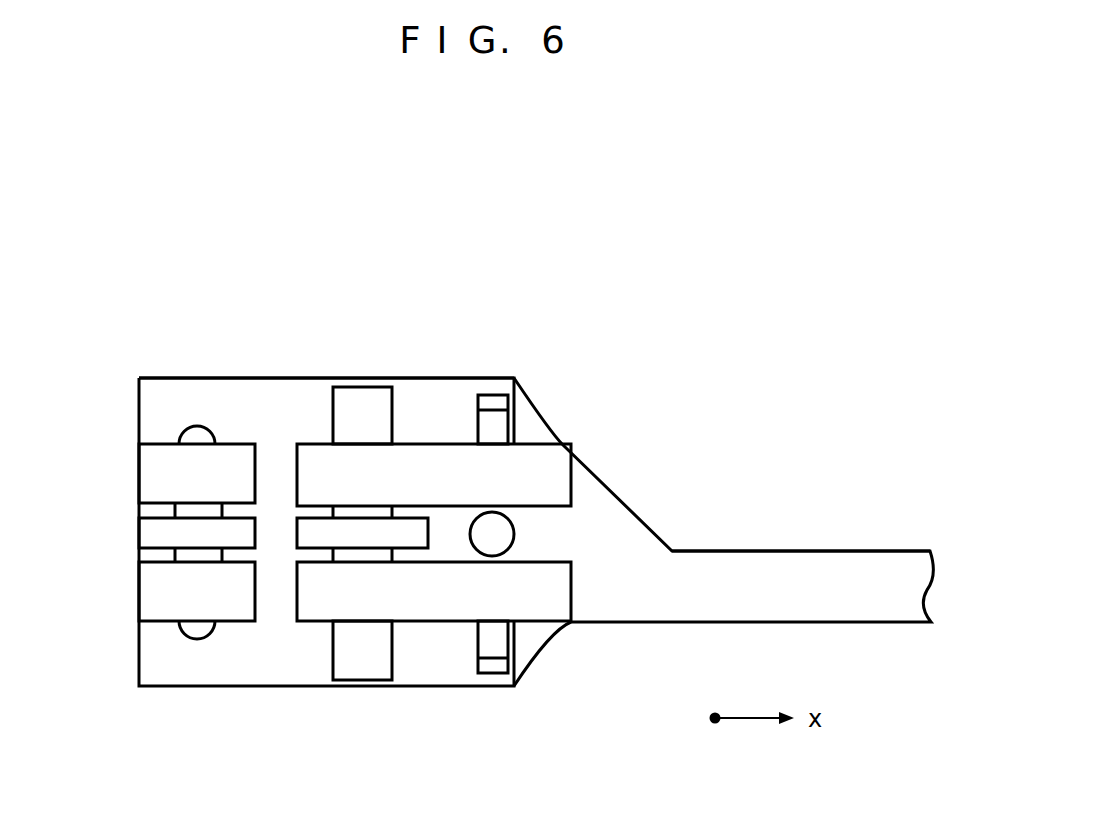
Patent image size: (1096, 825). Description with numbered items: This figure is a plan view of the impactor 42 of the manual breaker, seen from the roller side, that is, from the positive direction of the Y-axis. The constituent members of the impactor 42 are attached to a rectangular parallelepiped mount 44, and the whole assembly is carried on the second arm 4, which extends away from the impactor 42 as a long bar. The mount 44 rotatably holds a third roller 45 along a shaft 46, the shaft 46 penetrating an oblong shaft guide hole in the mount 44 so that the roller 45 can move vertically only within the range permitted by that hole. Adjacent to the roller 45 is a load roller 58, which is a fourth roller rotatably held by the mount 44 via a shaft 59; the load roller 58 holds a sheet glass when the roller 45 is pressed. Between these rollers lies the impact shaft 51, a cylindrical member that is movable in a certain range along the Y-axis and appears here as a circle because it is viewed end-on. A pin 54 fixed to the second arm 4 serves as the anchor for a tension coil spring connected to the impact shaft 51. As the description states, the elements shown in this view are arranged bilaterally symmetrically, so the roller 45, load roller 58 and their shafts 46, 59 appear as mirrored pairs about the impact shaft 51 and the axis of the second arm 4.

The second arm 4 is at (788, 560).
The impactor 42 is at (283, 313).
The mount 44 is at (197, 377).
The roller 45 is at (312, 532).
The shaft 46 is at (363, 387).
The impact shaft 51 is at (495, 541).
The pin 54 is at (490, 665).
The load roller 58 is at (150, 517).
The shaft 59 is at (197, 638).